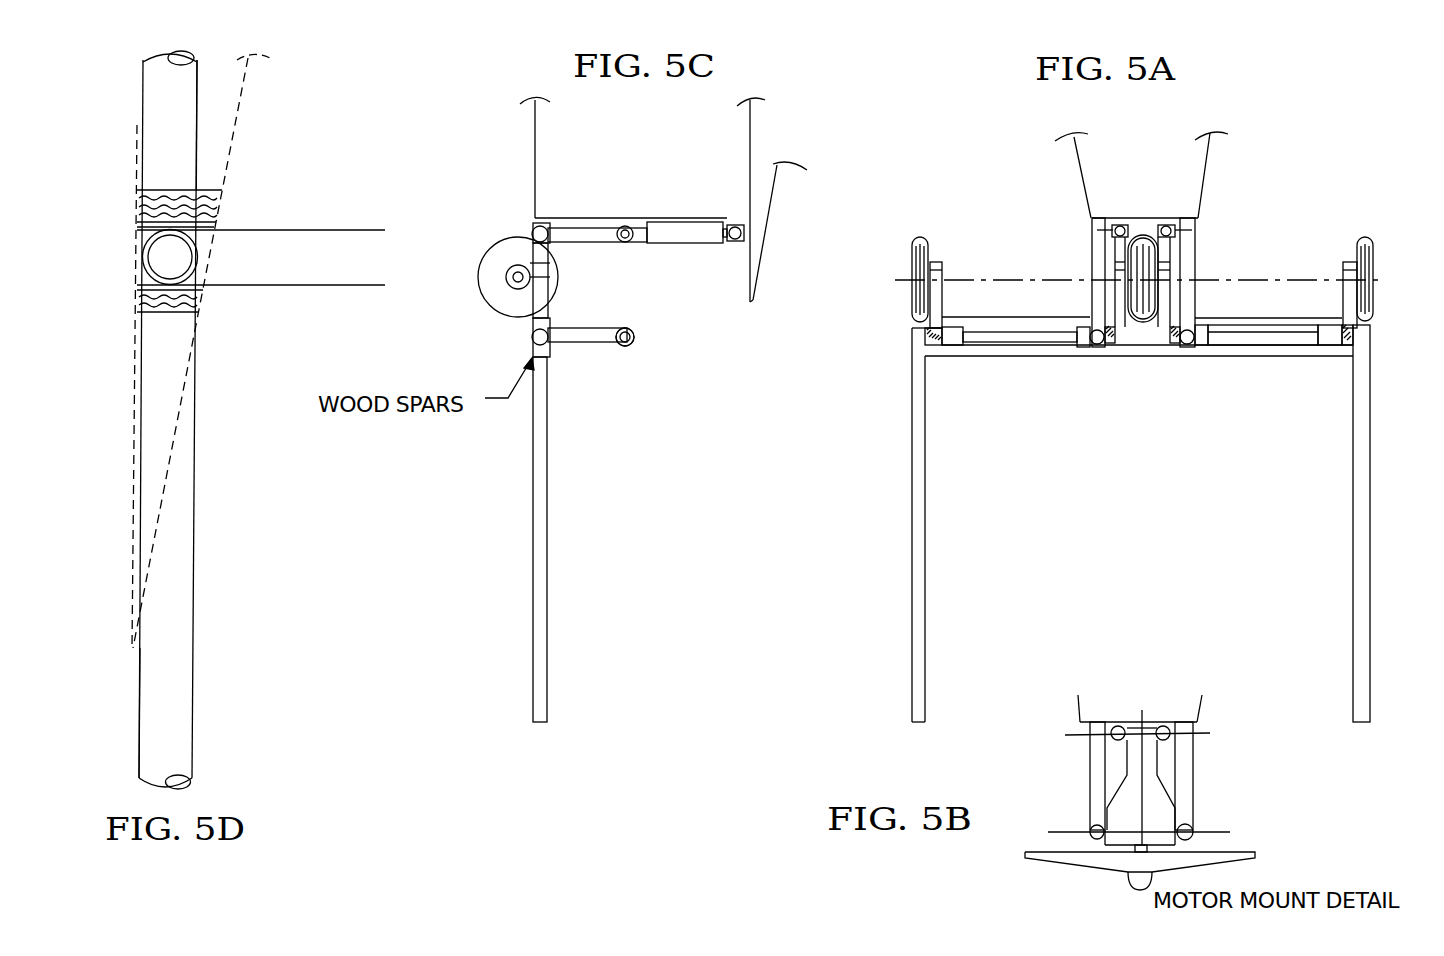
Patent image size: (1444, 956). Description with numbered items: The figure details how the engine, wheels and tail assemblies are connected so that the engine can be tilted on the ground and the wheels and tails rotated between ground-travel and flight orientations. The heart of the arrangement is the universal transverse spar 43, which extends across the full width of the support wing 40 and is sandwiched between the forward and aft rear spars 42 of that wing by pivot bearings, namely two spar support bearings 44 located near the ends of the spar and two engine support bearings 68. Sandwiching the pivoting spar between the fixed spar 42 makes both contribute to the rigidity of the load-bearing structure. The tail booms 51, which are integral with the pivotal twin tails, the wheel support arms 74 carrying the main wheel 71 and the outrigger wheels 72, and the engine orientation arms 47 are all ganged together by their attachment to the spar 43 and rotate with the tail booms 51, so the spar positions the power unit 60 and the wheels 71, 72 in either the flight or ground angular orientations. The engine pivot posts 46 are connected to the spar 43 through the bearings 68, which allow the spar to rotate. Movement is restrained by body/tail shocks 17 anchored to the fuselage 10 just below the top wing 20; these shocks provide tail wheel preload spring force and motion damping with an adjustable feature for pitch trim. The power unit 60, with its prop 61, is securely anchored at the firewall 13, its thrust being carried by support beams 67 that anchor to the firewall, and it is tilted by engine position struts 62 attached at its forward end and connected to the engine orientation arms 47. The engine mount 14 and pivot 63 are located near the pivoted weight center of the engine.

In FIG. 5A, the fuselage 10 is at (1141, 175).
In FIG. 5B, the fuselage 10 is at (1140, 758).
In FIG. 5C, the firewall 13 is at (605, 218).
In FIG. 5C, the engine mount 14 is at (723, 376).
In FIG. 5C, the body/tail shock 17 is at (695, 253).
In FIG. 5C, the top wing 20 is at (794, 200).
In FIG. 5D, the support wing 40 is at (137, 156).
In FIG. 5D, the rear spar 42 is at (149, 198).
In FIG. 5A, the rear spar 42 is at (1047, 318).
In FIG. 5D, the universal transverse spar 43 is at (157, 258).
In FIG. 5C, the universal transverse spar 43 is at (530, 340).
In FIG. 5A, the universal transverse spar 43 is at (937, 340).
In FIG. 5A, the spar support bearing 44 is at (948, 343).
In FIG. 5D, the engine pivot post 46 is at (291, 257).
In FIG. 5C, the engine pivot post 46 is at (580, 342).
In FIG. 5D, the engine orientation arm 47 is at (168, 420).
In FIG. 5C, the engine orientation arm 47 is at (535, 232).
In FIG. 5A, the engine orientation arm 47 is at (1120, 255).
In FIG. 5D, the tail boom 51 is at (145, 713).
In FIG. 5A, the tail boom 51 is at (915, 643).
In FIG. 5B, the power unit 60 is at (1150, 808).
In FIG. 5B, the prop 61 is at (1108, 860).
In FIG. 5C, the engine position strut 62 is at (575, 240).
In FIG. 5B, the engine position strut 62 is at (1117, 735).
In FIG. 5C, the pivot 63 is at (636, 338).
In FIG. 5B, the pivot 63 is at (1195, 827).
In FIG. 5A, the support beam 67 is at (1097, 243).
In FIG. 5B, the support beam 67 is at (1098, 773).
In FIG. 5A, the engine support bearing 68 is at (1087, 347).
In FIG. 5A, the main wheel 71 is at (1158, 255).
In FIG. 5A, the outrigger wheel 72 is at (1357, 243).
In FIG. 5D, the wheel support arm 74 is at (177, 125).
In FIG. 5C, the wheel support arm 74 is at (553, 278).
In FIG. 5A, the wheel support arm 74 is at (943, 270).